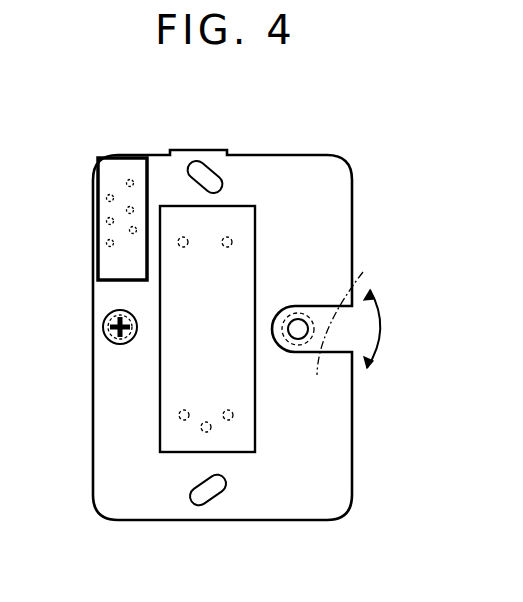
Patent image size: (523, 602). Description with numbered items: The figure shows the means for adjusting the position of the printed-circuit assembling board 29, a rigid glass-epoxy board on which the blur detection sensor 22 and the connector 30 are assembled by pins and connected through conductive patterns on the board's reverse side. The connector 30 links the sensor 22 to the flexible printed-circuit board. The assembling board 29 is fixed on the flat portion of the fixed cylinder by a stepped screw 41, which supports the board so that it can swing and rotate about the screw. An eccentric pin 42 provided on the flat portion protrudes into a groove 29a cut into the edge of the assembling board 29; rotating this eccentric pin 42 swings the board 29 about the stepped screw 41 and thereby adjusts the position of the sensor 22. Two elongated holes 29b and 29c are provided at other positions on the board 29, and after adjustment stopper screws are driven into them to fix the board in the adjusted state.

The printed-circuit assembling board 29 is at (334, 174).
The groove 29a is at (344, 292).
The elongated hole 29b is at (205, 176).
The elongated hole 29c is at (212, 492).
The connector 30 is at (100, 258).
The stepped screw 41 is at (103, 334).
The eccentric pin 42 is at (331, 339).
The blur detection sensor 22 is at (165, 423).